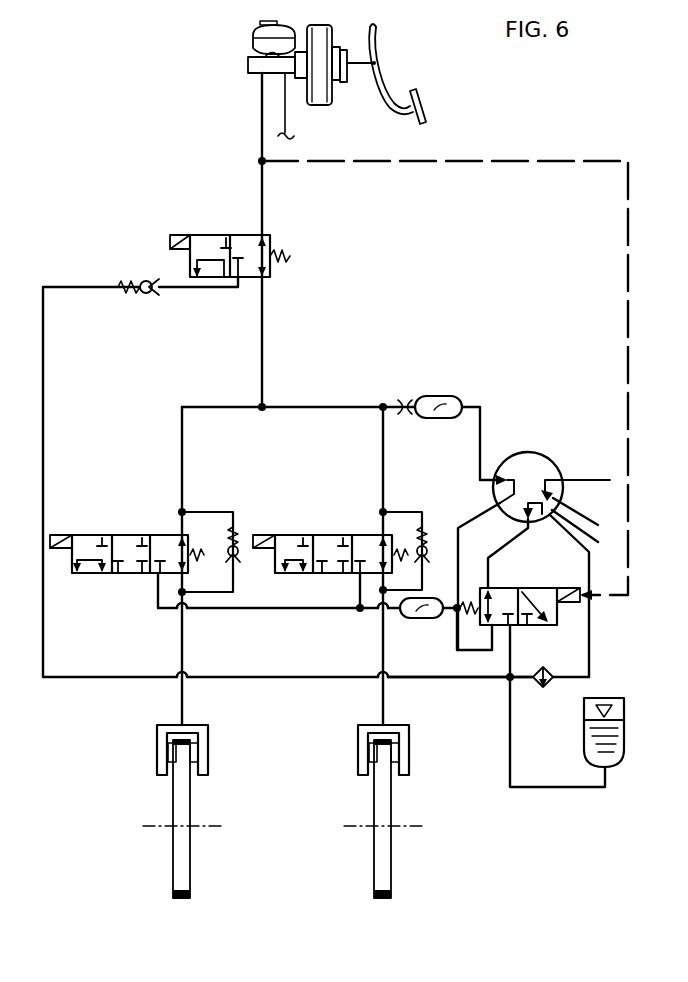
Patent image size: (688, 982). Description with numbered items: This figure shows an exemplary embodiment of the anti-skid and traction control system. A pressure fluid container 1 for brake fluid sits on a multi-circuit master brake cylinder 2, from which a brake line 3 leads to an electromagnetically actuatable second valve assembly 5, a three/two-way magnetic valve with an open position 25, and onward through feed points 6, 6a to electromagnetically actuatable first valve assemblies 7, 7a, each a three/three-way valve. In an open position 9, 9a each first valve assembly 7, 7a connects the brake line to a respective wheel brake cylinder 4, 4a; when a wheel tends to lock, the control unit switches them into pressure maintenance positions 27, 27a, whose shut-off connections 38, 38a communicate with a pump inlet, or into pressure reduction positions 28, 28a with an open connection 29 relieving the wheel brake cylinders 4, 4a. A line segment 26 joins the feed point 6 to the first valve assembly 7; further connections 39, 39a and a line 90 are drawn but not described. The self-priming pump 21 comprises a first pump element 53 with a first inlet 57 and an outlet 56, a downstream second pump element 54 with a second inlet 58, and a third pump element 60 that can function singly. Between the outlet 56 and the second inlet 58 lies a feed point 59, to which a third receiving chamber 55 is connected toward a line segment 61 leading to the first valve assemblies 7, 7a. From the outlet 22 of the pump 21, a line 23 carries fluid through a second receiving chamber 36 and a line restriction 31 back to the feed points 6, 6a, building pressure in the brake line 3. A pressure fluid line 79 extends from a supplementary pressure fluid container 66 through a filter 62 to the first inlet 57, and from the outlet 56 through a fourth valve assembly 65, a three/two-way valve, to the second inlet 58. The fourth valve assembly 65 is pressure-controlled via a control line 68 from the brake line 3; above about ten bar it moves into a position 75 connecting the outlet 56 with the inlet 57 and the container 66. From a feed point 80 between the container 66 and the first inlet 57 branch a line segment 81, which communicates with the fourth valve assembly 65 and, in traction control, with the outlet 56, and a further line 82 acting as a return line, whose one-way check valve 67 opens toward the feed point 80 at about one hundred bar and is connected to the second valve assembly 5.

The pressure fluid container 1 is at (262, 28).
The multi-circuit master brake cylinder 2 is at (252, 72).
The brake line 3 is at (265, 197).
The wheel brake cylinder 4 is at (210, 748).
The wheel brake cylinder 4a is at (410, 750).
The second valve assembly 5 is at (218, 257).
The feed point 6 is at (264, 405).
The feed point 6a is at (382, 404).
The first valve assembly 7 is at (145, 551).
The first valve assembly 7a is at (337, 541).
The open position 9 is at (176, 540).
The open position 9a is at (378, 540).
The pump 21 is at (535, 467).
The outlet 22 is at (482, 460).
The line 23 is at (388, 402).
The open position 25 is at (250, 262).
The line segment 26 is at (184, 455).
The pressure maintenance position 27 is at (130, 561).
The pressure maintenance position 27a is at (345, 561).
The pressure reduction position 28 is at (91, 556).
The pressure reduction position 28a is at (302, 557).
The open connection 29 is at (212, 245).
The line restriction 31 is at (406, 400).
The second receiving chamber 36 is at (445, 400).
The shut-off connection 38 is at (128, 575).
The shut-off connection 38a is at (340, 575).
The return port 39 is at (90, 575).
The return port 39a is at (292, 575).
The first pump element 53 is at (528, 524).
The second pump element 54 is at (500, 490).
The third receiving chamber 55 is at (412, 616).
The outlet 56 is at (525, 520).
The first inlet 57 is at (598, 526).
The second inlet 58 is at (490, 508).
The feed point 59 is at (455, 605).
The third pump element 60 is at (560, 486).
The line segment 61 is at (248, 612).
The filter 62 is at (538, 688).
The fourth valve assembly 65 is at (556, 612).
The supplementary pressure fluid container 66 is at (610, 770).
The one-way check valve 67 is at (152, 293).
The control line 68 is at (483, 163).
The position 75 is at (534, 610).
The pressure fluid line 79 is at (590, 672).
The feed point 80 is at (508, 680).
The line segment 81 is at (512, 645).
The further line 82 is at (287, 477).
The connecting line 90 is at (475, 650).